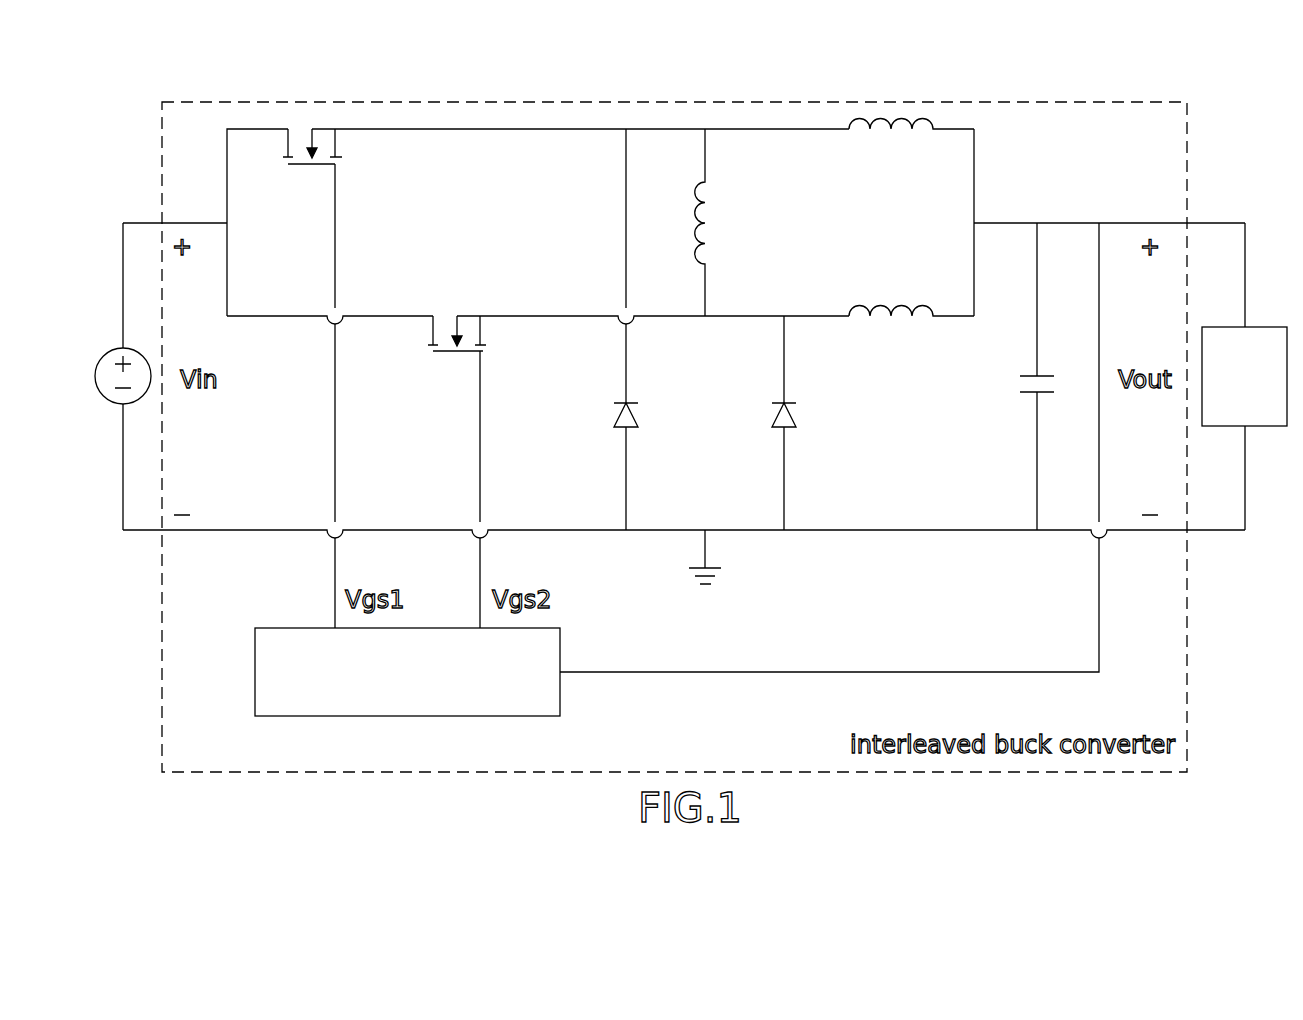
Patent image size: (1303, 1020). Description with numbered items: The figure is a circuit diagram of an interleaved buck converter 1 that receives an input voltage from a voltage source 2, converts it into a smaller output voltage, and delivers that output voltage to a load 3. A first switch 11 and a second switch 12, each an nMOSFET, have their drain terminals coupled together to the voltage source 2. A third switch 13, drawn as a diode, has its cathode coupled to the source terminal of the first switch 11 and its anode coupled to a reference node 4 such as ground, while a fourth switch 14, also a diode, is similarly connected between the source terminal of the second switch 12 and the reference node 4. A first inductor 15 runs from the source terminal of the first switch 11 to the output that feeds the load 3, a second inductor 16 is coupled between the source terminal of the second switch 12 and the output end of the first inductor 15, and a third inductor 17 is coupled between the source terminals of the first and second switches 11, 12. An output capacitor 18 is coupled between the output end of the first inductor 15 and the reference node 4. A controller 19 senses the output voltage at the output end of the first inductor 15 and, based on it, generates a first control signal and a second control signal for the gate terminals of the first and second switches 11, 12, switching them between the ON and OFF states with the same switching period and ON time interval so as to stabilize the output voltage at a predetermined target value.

The interleaved buck converter 1 is at (550, 101).
The voltage source 2 is at (95, 376).
The load 3 is at (1270, 327).
The reference node 4 is at (712, 566).
The first switch 11 is at (308, 166).
The second switch 12 is at (459, 353).
The third switch 13 is at (633, 413).
The fourth switch 14 is at (792, 413).
The first inductor 15 is at (900, 121).
The second inductor 16 is at (879, 308).
The third inductor 17 is at (707, 236).
The output capacitor 18 is at (1028, 395).
The controller 19 is at (560, 650).